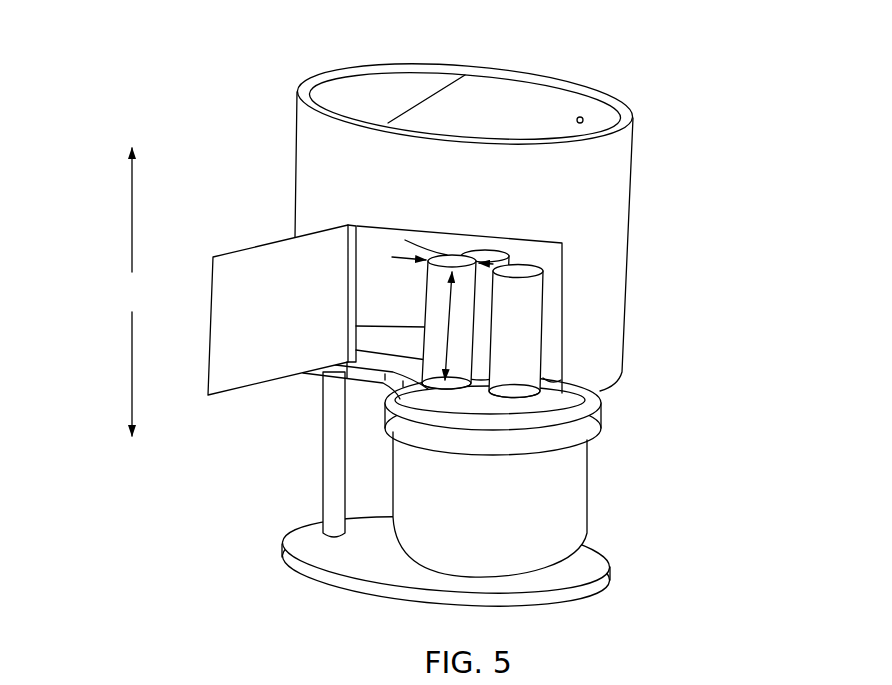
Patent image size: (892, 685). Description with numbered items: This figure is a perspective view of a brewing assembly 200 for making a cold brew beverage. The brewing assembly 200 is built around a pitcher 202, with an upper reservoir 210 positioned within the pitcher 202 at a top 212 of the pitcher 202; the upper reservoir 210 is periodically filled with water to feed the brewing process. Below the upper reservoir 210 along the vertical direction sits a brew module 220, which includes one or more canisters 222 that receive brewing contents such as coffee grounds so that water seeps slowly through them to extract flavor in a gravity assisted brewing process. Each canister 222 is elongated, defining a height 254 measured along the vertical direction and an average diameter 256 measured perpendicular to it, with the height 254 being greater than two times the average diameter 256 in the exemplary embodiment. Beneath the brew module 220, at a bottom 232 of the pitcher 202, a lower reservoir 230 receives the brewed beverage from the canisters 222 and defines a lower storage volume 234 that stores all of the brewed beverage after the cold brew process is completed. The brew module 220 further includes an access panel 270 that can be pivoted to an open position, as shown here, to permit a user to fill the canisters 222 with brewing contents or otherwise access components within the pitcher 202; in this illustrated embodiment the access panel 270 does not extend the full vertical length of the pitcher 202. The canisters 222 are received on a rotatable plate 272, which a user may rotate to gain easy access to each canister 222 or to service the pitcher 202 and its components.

The brewing assembly 200 is at (698, 82).
The pitcher 202 is at (627, 210).
The upper reservoir 210 is at (565, 248).
The top 212 is at (634, 109).
The brew module 220 is at (549, 351).
The canister 222 is at (525, 318).
The lower reservoir 230 is at (580, 490).
The bottom 232 is at (618, 571).
The lower storage volume 234 is at (529, 516).
The height 254 is at (448, 308).
The average diameter 256 is at (394, 257).
The access panel 270 is at (250, 247).
The rotatable plate 272 is at (590, 393).